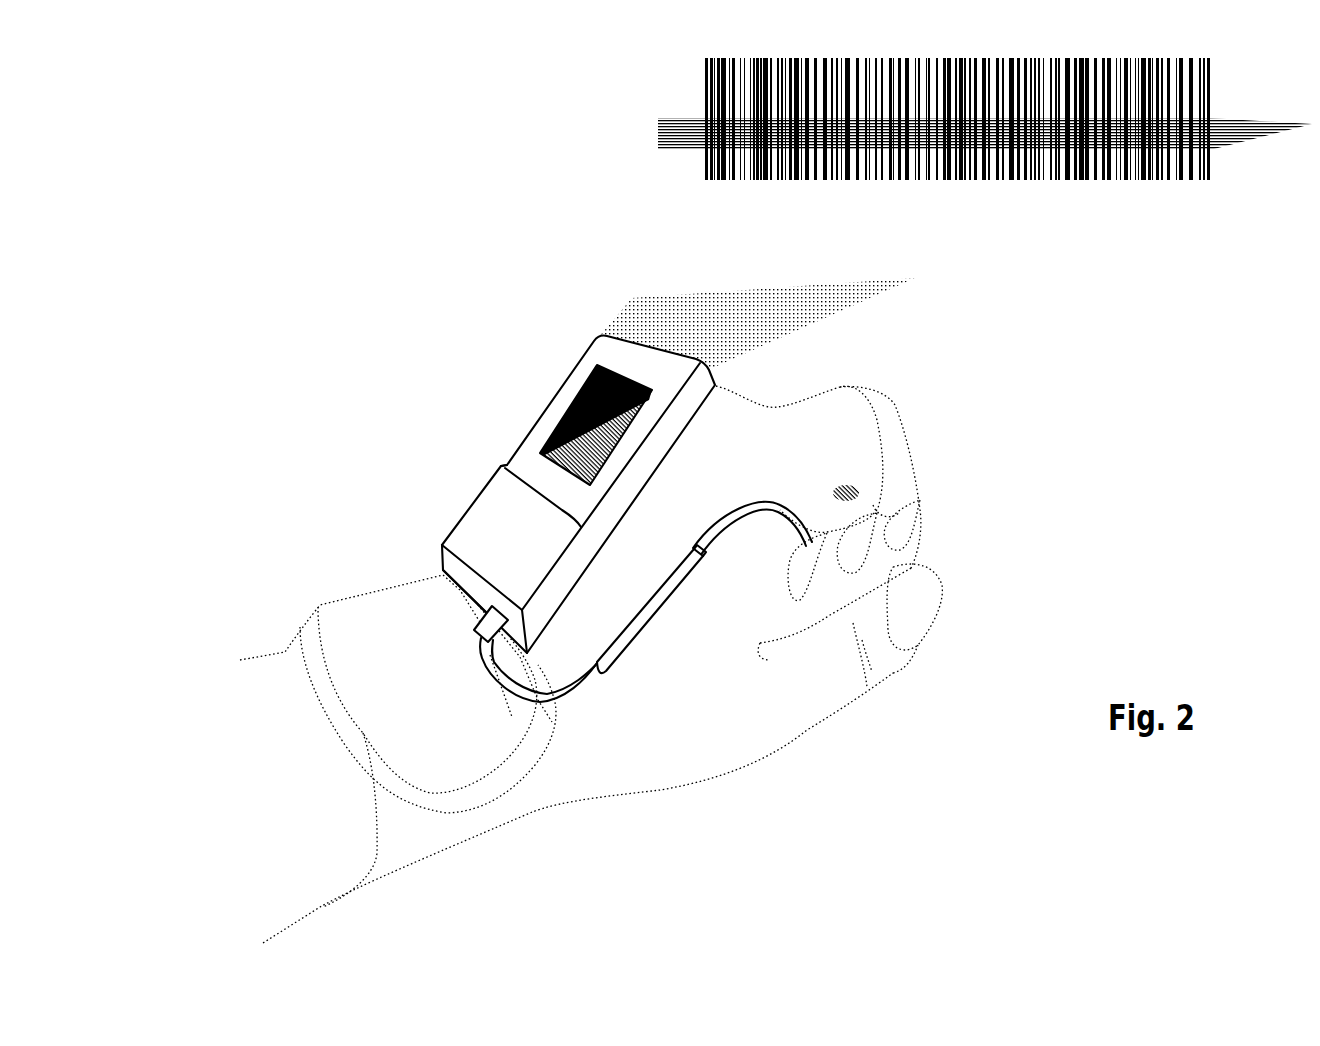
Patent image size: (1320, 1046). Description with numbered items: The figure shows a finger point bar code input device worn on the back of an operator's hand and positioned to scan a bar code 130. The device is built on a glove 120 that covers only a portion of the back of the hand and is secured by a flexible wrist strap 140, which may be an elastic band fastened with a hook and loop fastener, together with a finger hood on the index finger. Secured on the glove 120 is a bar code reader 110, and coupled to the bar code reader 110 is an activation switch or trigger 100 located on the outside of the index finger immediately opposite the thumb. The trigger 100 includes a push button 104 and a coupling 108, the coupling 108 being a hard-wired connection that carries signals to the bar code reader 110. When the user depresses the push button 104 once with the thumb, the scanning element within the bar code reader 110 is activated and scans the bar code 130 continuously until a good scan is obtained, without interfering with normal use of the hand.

The trigger 100 is at (640, 633).
The push button 104 is at (843, 483).
The coupling 108 is at (500, 687).
The bar code reader 110 is at (518, 440).
The glove 120 is at (663, 495).
The bar code 130 is at (640, 84).
The wrist strap 140 is at (305, 590).